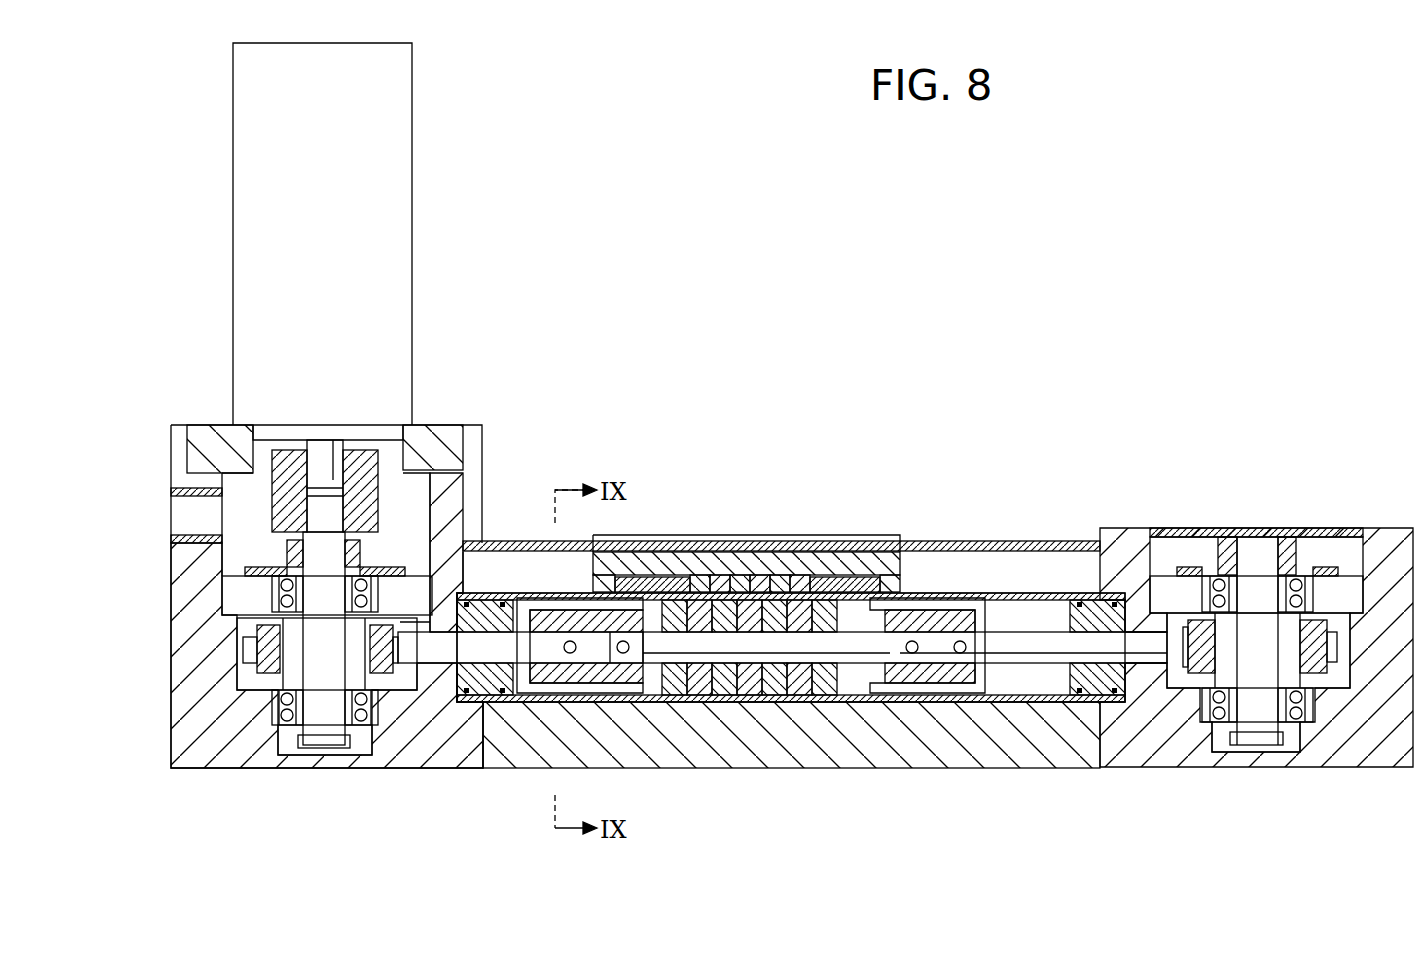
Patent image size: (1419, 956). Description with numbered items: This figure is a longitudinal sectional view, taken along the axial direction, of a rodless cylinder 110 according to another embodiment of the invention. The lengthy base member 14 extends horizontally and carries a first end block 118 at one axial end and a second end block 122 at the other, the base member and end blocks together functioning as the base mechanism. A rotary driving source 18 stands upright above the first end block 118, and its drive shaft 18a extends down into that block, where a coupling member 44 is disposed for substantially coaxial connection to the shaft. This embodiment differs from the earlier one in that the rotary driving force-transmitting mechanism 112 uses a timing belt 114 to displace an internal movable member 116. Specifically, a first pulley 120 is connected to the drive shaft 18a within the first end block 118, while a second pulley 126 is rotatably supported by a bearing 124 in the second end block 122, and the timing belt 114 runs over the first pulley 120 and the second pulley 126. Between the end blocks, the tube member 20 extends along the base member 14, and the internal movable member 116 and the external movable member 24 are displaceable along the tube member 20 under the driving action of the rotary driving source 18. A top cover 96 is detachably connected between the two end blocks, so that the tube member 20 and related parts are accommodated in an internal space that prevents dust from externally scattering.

The rodless cylinder 110 is at (1092, 330).
The rotary driving source 18 is at (385, 318).
The drive shaft 18a is at (322, 450).
The coupling member 44 is at (365, 496).
The first end block 118 is at (222, 745).
The first pulley 120 is at (335, 760).
The bearing 124 is at (270, 597).
The timing belt 114 is at (440, 650).
The top cover 96 is at (943, 541).
The external movable member 24 is at (688, 565).
The internal movable member 116 is at (822, 575).
The tube member 20 is at (984, 595).
The rotary driving force-transmitting mechanism 112 is at (1003, 632).
The base member 14 is at (918, 766).
The second end block 122 is at (1367, 725).
The second pulley 126 is at (1255, 670).